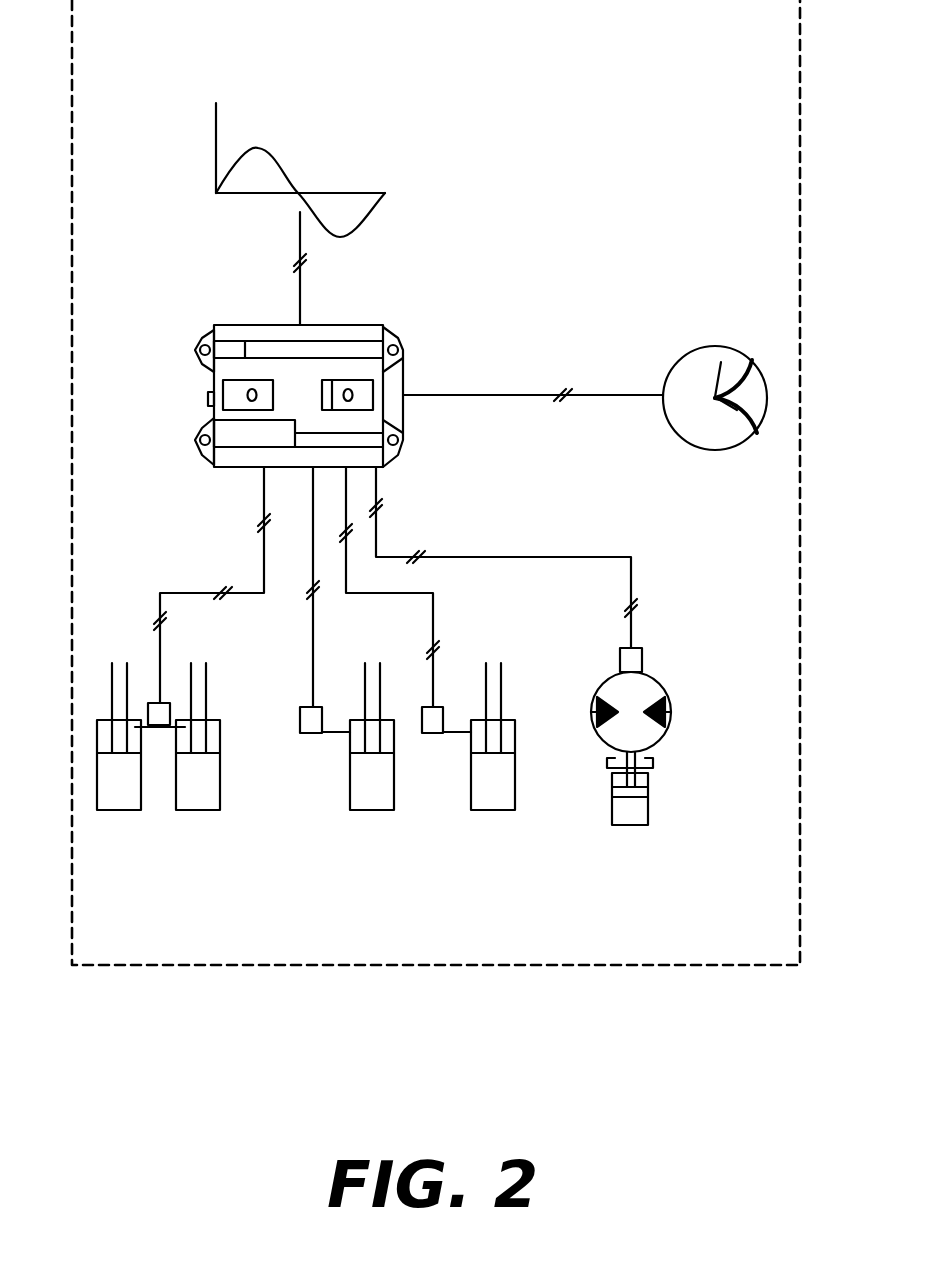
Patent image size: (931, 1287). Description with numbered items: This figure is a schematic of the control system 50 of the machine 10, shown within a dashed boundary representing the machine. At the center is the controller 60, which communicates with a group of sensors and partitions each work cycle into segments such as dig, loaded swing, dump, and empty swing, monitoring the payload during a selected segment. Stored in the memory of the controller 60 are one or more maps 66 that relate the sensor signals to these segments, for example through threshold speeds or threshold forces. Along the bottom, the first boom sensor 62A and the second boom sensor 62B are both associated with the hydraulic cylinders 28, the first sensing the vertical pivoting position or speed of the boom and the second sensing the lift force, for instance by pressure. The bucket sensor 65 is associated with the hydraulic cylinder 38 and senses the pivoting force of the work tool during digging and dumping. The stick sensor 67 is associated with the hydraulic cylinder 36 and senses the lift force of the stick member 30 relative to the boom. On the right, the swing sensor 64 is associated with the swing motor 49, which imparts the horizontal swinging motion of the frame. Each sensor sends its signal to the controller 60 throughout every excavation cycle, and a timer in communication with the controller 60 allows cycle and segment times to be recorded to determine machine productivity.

The machine 10 is at (130, 965).
The control system 50 is at (550, 216).
The maps 66 is at (215, 167).
The controller 60 is at (404, 412).
The stick member 30 is at (688, 347).
The first boom sensor 62A is at (150, 703).
The second boom sensor 62B is at (168, 703).
The hydraulic cylinders 28 is at (222, 790).
The bucket sensor 65 is at (300, 715).
The hydraulic cylinder 38 is at (393, 787).
The stick sensor 67 is at (443, 718).
The hydraulic cylinder 36 is at (515, 787).
The swing sensor 64 is at (642, 657).
The swing motor 49 is at (672, 733).